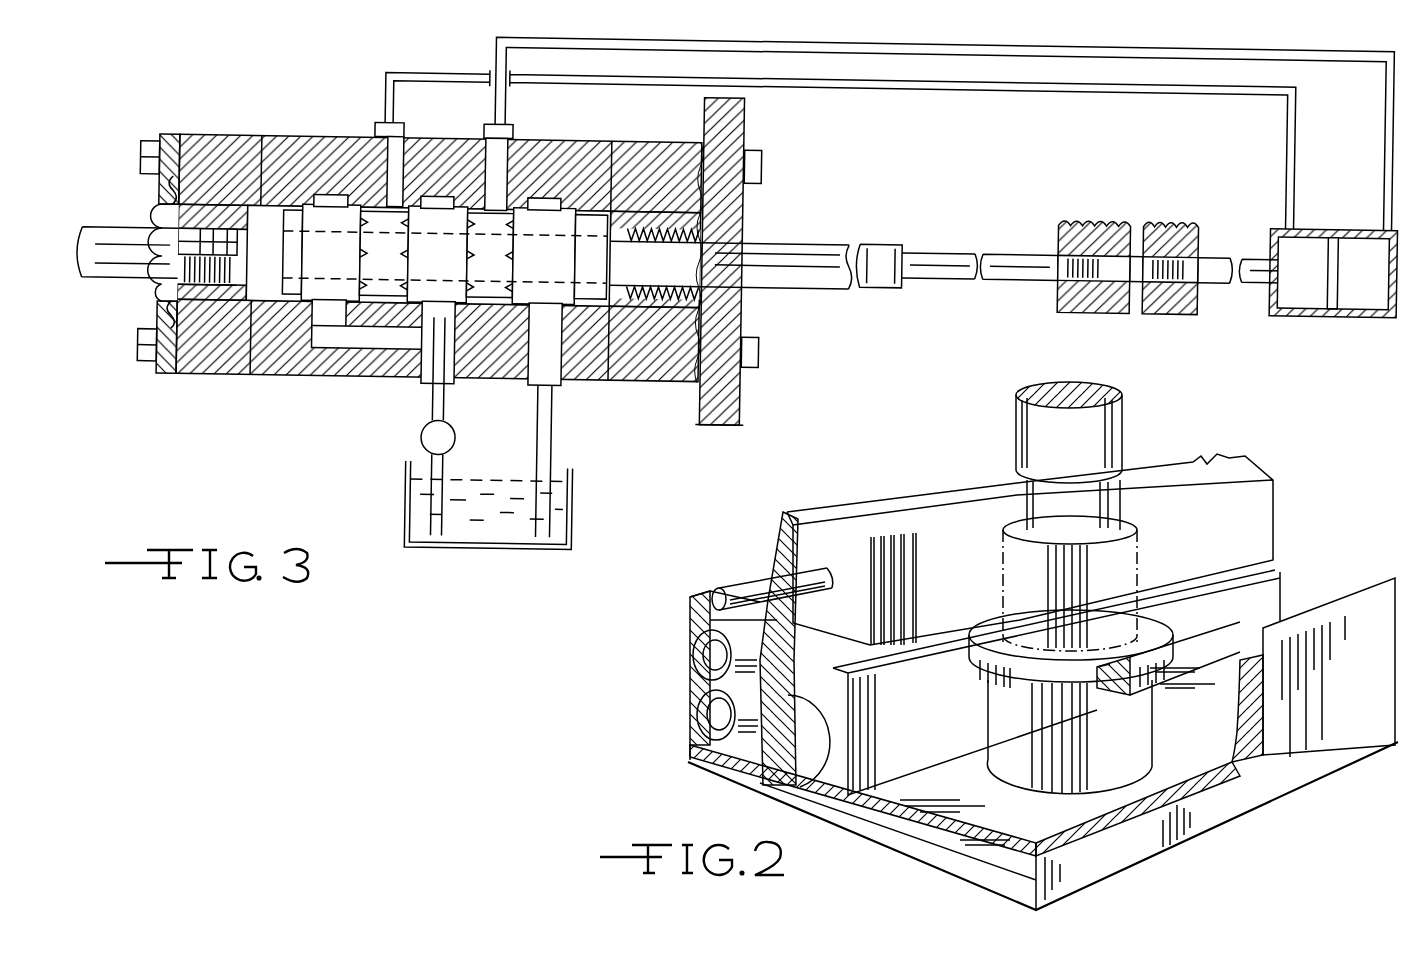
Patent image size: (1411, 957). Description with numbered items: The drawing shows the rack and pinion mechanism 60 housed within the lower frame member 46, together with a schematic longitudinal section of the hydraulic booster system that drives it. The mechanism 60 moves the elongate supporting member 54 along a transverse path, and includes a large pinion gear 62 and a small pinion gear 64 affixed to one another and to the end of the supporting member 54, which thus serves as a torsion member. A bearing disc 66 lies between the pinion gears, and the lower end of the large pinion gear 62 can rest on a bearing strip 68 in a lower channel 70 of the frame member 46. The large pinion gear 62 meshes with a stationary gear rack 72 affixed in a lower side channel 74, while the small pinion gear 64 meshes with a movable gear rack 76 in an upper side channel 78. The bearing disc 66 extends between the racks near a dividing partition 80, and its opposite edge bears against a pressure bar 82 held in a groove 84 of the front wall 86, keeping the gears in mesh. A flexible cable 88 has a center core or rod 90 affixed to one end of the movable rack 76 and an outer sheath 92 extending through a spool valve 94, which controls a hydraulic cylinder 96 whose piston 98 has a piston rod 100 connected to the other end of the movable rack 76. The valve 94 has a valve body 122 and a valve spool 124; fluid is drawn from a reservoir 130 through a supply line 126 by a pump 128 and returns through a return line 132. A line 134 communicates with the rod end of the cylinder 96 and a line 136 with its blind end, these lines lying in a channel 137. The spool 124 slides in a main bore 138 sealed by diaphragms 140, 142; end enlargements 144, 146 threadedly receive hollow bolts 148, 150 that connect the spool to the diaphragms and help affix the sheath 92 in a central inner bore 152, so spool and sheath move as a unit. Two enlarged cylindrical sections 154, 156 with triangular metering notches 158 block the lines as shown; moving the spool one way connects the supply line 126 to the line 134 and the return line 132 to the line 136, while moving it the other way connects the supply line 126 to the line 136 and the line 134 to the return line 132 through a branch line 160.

In FIG. 2, the lower frame member 46 is at (774, 803).
In FIG. 2, the elongate supporting member 54 is at (1125, 436).
In FIG. 2, the rack and pinion mechanism 60 is at (1168, 757).
In FIG. 2, the large pinion gear 62 is at (1087, 761).
In FIG. 2, the small pinion gear 64 is at (1140, 562).
In FIG. 2, the bearing disc 66 is at (1175, 626).
In FIG. 2, the bearing strip 68 is at (950, 823).
In FIG. 2, the lower channel 70 is at (967, 827).
In FIG. 2, the stationary gear rack 72 is at (730, 770).
In FIG. 2, the lower side channel 74 is at (790, 797).
In FIG. 3, the movable gear rack 76 is at (1109, 207).
In FIG. 2, the movable gear rack 76 is at (790, 551).
In FIG. 2, the upper side channel 78 is at (803, 533).
In FIG. 2, the dividing partition 80 is at (777, 620).
In FIG. 2, the pressure bar 82 is at (1263, 712).
In FIG. 2, the groove 84 is at (1268, 646).
In FIG. 2, the front wall 86 is at (1368, 601).
In FIG. 3, the flexible cable 88 is at (798, 226).
In FIG. 3, the center core or rod 90 is at (932, 240).
In FIG. 2, the center core or rod 90 is at (738, 581).
In FIG. 3, the outer sheath 92 is at (854, 235).
In FIG. 3, the spool valve 94 is at (328, 100).
In FIG. 3, the hydraulic cylinder 96 is at (1342, 297).
In FIG. 3, the piston 98 is at (1327, 284).
In FIG. 3, the piston rod 100 is at (1215, 270).
In FIG. 3, the valve body 122 is at (293, 374).
In FIG. 3, the valve spool 124 is at (559, 380).
In FIG. 3, the supply line 126 is at (433, 399).
In FIG. 3, the pump 128 is at (421, 432).
In FIG. 3, the reservoir 130 is at (407, 501).
In FIG. 3, the return line 132 is at (548, 420).
In FIG. 3, the line 134 is at (380, 88).
In FIG. 2, the line 134 is at (690, 704).
In FIG. 3, the line 136 is at (501, 88).
In FIG. 2, the line 136 is at (690, 656).
In FIG. 2, the channel 137 is at (793, 747).
In FIG. 3, the main bore 138 is at (230, 303).
In FIG. 3, the diaphragm 140 is at (170, 194).
In FIG. 3, the diaphragm 142 is at (748, 310).
In FIG. 3, the end enlargement 144 is at (261, 203).
In FIG. 3, the end enlargement 146 is at (655, 220).
In FIG. 3, the hollow bolt 148 is at (158, 284).
In FIG. 3, the hollow bolt 150 is at (743, 225).
In FIG. 3, the central inner bore 152 is at (250, 231).
In FIG. 3, the enlarged cylindrical section 154 is at (401, 122).
In FIG. 3, the enlarged cylindrical section 156 is at (480, 128).
In FIG. 3, the triangular metering notches 158 is at (358, 282).
In FIG. 3, the branch line 160 is at (369, 346).